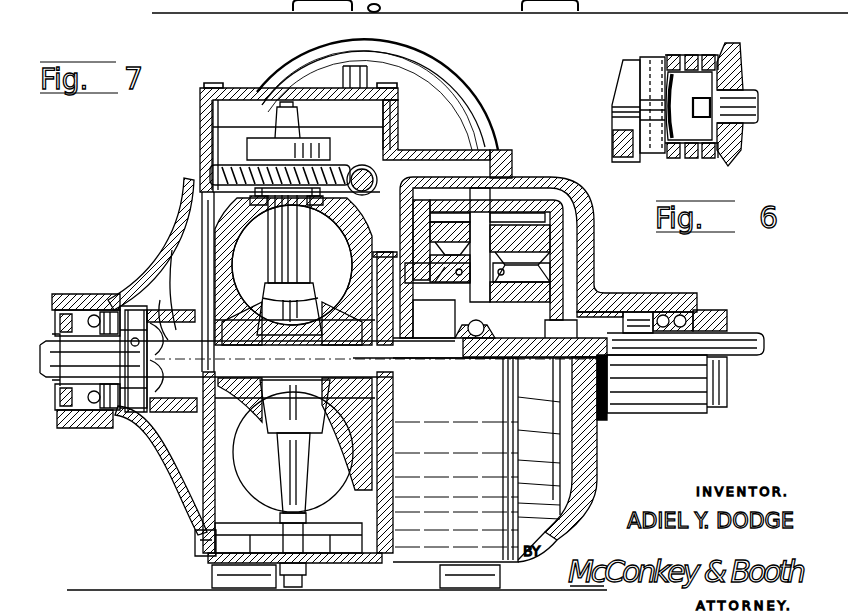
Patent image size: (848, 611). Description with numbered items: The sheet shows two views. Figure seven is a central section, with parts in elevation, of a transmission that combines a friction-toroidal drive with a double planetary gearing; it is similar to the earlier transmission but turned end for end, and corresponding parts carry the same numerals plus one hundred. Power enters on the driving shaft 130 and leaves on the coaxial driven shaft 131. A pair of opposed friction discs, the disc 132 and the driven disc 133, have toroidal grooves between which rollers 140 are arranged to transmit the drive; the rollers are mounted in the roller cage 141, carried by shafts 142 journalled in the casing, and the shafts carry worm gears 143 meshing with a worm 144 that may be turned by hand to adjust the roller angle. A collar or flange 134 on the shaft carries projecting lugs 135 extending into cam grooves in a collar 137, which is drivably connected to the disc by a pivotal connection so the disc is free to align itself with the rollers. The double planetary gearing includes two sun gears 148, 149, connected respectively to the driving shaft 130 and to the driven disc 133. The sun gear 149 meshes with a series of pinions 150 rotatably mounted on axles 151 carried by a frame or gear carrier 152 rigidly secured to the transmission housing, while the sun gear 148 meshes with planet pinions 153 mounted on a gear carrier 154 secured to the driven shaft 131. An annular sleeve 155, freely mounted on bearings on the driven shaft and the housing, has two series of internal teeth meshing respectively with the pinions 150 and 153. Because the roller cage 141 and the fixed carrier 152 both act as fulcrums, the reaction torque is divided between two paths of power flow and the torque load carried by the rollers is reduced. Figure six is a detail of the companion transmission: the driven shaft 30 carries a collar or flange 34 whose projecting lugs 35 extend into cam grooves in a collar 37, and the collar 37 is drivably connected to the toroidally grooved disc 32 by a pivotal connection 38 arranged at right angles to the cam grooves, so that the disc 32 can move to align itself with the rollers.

In FIG. 7, the driving shaft 130 is at (68, 398).
In FIG. 7, the driven shaft 131 is at (742, 352).
In FIG. 7, the friction disc 132 is at (198, 196).
In FIG. 7, the driven disc 133 is at (328, 213).
In FIG. 7, the collar or flange 134 is at (128, 322).
In FIG. 7, the projecting lugs 135 is at (150, 302).
In FIG. 7, the collar 137 is at (166, 266).
In FIG. 7, the rollers 140 is at (328, 398).
In FIG. 7, the roller cage 141 is at (262, 418).
In FIG. 7, the shafts 142 is at (270, 480).
In FIG. 7, the worm gears 143 is at (244, 162).
In FIG. 7, the worm 144 is at (395, 165).
In FIG. 7, the sun gear 148 is at (597, 427).
In FIG. 7, the sun gear 149 is at (430, 337).
In FIG. 7, the pinions 150 is at (494, 148).
In FIG. 7, the axles 151 is at (448, 268).
In FIG. 7, the frame or gear carrier 152 is at (427, 250).
In FIG. 7, the planet pinions 153 is at (540, 225).
In FIG. 7, the gear carrier 154 is at (588, 288).
In FIG. 7, the annular sleeve 155 is at (503, 213).
In FIG. 6, the driven shaft 30 is at (672, 95).
In FIG. 6, the disc 32 is at (730, 80).
In FIG. 6, the collar or flange 34 is at (643, 57).
In FIG. 6, the projecting lugs 35 is at (668, 55).
In FIG. 6, the collar 37 is at (688, 90).
In FIG. 6, the pivotal connection 38 is at (703, 110).